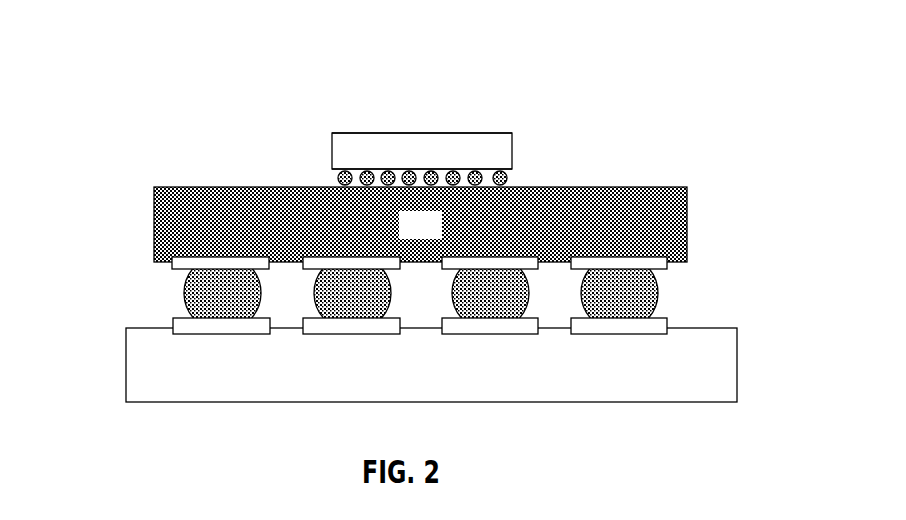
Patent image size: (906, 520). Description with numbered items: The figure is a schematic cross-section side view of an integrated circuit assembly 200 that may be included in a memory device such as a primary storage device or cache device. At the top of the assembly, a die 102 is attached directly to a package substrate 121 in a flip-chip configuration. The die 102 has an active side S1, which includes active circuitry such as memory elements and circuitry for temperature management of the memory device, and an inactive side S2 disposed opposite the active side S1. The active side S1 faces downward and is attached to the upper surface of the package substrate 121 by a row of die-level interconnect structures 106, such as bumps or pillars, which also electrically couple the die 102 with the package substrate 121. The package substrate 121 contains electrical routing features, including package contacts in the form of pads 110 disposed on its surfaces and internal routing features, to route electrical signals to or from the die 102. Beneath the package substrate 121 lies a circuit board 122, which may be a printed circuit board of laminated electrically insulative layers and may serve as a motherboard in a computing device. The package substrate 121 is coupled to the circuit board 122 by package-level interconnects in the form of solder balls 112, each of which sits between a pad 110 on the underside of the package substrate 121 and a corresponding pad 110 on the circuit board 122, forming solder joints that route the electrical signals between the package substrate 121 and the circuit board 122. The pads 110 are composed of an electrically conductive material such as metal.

The integrated circuit (IC) assembly 200 is at (666, 60).
The die 102 is at (380, 165).
The active side S1 is at (515, 169).
The inactive side S2 is at (513, 133).
The die-level interconnect structures 106 is at (337, 179).
The package substrate 121 is at (440, 237).
The pads 110 is at (183, 269).
The solder balls 112 is at (185, 300).
The circuit board 122 is at (440, 378).